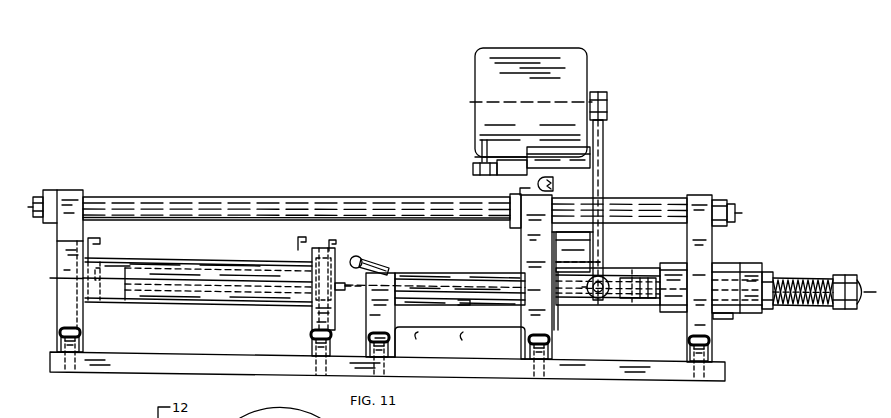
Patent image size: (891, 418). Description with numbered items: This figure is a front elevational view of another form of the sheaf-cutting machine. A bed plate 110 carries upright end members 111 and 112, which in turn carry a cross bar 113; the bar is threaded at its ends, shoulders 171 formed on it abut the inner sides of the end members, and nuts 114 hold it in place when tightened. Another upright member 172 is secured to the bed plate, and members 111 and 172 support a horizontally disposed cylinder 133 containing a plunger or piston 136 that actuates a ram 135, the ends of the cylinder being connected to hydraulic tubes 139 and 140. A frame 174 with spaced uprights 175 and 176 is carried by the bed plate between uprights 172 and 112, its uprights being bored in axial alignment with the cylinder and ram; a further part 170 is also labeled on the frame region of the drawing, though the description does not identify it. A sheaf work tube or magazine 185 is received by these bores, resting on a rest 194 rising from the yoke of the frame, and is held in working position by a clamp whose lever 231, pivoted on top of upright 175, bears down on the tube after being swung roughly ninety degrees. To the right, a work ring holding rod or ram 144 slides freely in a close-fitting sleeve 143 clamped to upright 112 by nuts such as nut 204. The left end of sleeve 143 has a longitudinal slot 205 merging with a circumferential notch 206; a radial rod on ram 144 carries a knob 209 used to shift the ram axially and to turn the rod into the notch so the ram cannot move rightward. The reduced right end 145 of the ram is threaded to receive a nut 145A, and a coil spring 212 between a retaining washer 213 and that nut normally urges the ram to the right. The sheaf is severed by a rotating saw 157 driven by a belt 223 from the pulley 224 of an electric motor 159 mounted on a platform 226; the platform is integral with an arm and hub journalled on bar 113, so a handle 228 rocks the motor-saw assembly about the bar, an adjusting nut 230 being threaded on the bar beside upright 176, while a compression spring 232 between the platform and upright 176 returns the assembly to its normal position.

The bed plate 110 is at (434, 357).
The upright end member 111 is at (57, 311).
The upright end member 112 is at (712, 243).
The cross bar 113 is at (613, 199).
The nut 114 is at (718, 201).
The cylinder 133 is at (207, 259).
The ram 135 is at (336, 290).
The plunger or piston 136 is at (118, 270).
The hydraulic tube 139 is at (100, 247).
The hydraulic tube 140 is at (298, 244).
The sleeve 143 is at (606, 268).
The work ring holding rod or ram 144 is at (722, 319).
The reduced right end of ram 145 is at (796, 278).
The nut 145A is at (846, 278).
The saw (cutting tool) 157 is at (559, 250).
The electric motor 159 is at (475, 96).
The bolt 170 is at (430, 335).
The shoulder 171 is at (85, 197).
The upright member 172 is at (345, 240).
The frame 174 is at (475, 335).
The upright 175 is at (369, 321).
The upright 176 is at (552, 337).
The sheaf work tube or magazine 185 is at (420, 276).
The rest 194 is at (465, 294).
The nut 204 is at (752, 264).
The longitudinally extending slot 205 is at (617, 300).
The circumferential notch 206 is at (598, 300).
The knob 209 is at (676, 262).
The coil spring 212 is at (808, 280).
The retaining washer 213 is at (765, 273).
The belt 223 is at (603, 156).
The pulley 224 is at (607, 98).
The platform 226 is at (473, 173).
The handle 228 is at (558, 151).
The adjusting nut 230 is at (523, 194).
The lever 231 is at (371, 265).
The compression spring 232 is at (556, 184).